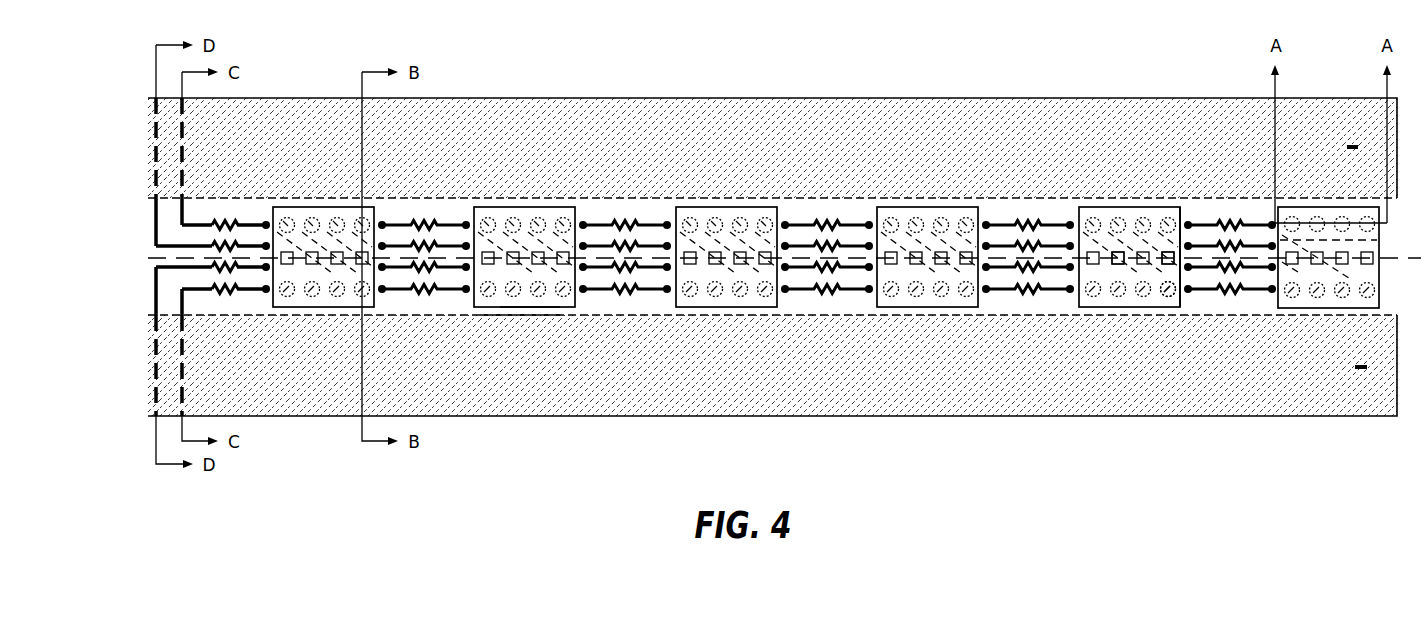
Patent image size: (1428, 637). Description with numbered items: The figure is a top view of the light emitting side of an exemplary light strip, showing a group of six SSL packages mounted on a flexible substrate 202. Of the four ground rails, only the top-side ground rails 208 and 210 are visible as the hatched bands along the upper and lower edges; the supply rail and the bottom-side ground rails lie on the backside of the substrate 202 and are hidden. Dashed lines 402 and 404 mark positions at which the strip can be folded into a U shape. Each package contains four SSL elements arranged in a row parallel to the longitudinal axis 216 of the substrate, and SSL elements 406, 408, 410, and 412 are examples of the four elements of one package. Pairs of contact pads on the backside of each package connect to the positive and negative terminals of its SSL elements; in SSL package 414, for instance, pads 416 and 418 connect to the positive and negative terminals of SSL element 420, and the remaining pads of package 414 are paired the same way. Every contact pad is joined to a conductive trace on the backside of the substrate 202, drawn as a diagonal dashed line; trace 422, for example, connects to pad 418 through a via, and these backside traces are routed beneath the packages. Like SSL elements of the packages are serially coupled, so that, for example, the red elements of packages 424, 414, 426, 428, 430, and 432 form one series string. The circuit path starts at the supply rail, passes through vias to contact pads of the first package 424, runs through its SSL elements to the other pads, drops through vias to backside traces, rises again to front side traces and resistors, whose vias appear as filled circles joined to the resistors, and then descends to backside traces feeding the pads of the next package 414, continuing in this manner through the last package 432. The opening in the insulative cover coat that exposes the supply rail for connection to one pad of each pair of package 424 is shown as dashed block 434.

The substrate 202 is at (603, 212).
The top-side ground rail 208 is at (802, 108).
The top-side ground rail 210 is at (977, 400).
The longitudinal axis 216 is at (1008, 222).
The dashed line 402 is at (576, 197).
The dashed line 404 is at (510, 314).
The SSL element 406 is at (887, 248).
The SSL element 408 is at (914, 248).
The SSL element 410 is at (938, 248).
The SSL element 412 is at (961, 248).
The SSL package 414 is at (1078, 210).
The contact pad 416 is at (1179, 213).
The contact pad 418 is at (1173, 287).
The SSL element 420 is at (1158, 259).
The backside trace 422 is at (1100, 260).
The SSL package 424 is at (1327, 308).
The SSL package 426 is at (918, 307).
The SSL package 428 is at (725, 307).
The SSL package 430 is at (548, 307).
The SSL package 432 is at (298, 307).
The dashed block 434 is at (1312, 241).